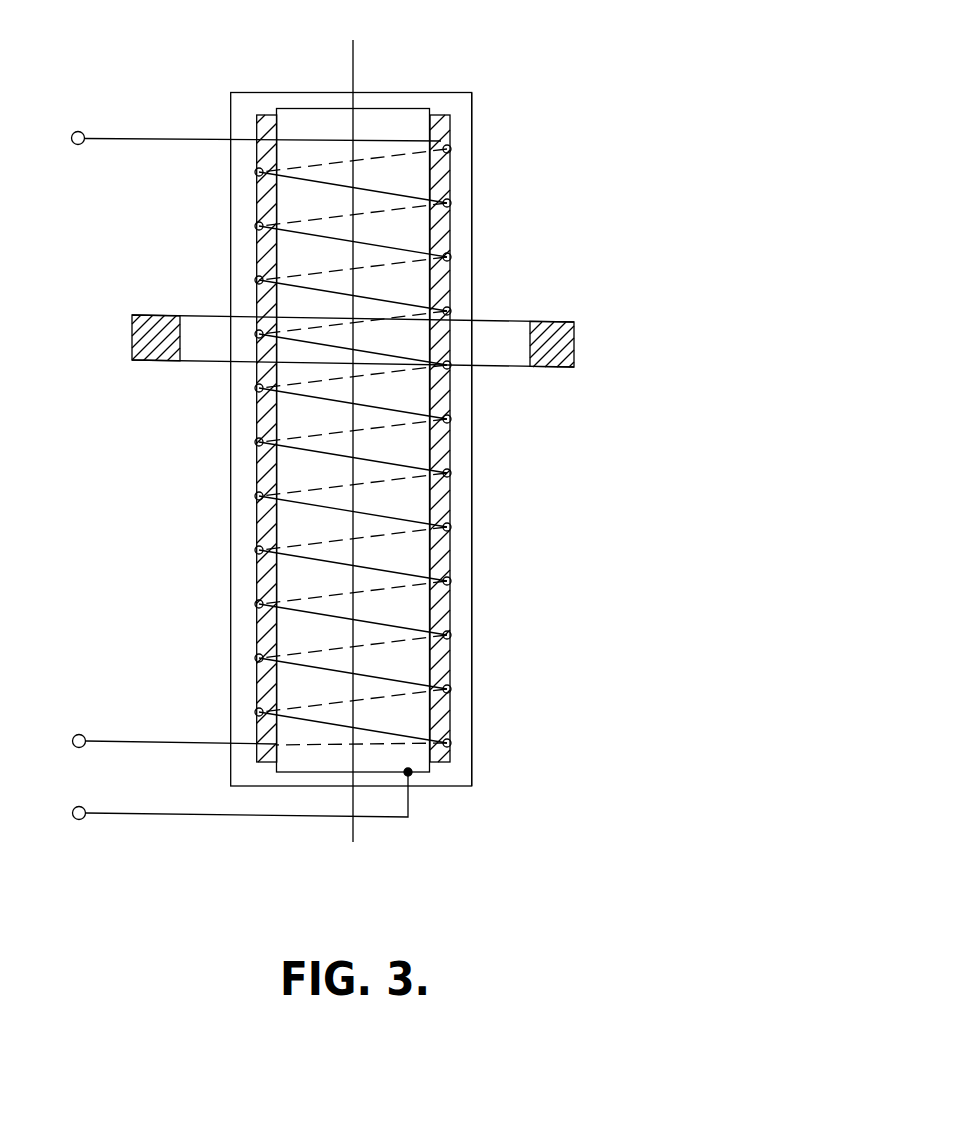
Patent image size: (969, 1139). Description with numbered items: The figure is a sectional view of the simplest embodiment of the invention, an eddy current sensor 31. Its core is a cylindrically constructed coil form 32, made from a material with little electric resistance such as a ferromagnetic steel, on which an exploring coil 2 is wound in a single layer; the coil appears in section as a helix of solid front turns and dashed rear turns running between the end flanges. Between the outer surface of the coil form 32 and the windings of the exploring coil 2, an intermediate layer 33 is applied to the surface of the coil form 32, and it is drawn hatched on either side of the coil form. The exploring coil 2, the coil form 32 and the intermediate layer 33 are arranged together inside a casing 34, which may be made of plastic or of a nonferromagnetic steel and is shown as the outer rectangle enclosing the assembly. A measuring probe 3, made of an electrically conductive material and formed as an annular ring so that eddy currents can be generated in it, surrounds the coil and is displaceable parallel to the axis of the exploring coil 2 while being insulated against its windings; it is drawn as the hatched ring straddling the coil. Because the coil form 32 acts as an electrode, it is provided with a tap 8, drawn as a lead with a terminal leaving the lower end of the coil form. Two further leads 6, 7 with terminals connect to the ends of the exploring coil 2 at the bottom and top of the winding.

The exploring coil 2 is at (390, 246).
The measuring probe 3 is at (131, 341).
The coil terminal lead 6 is at (154, 739).
The coil terminal lead 7 is at (236, 136).
The tap 8 is at (222, 802).
The eddy current sensor 31 is at (442, 415).
The coil form 32 is at (314, 386).
The intermediate layer 33 is at (445, 453).
The casing 34 is at (473, 592).